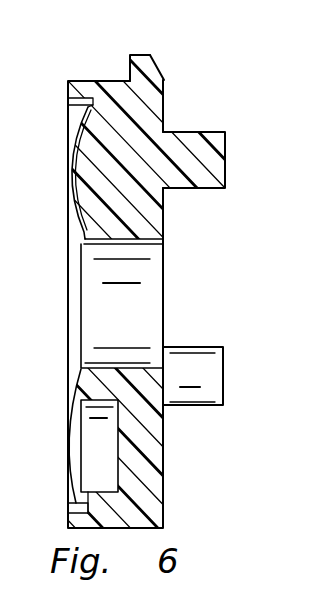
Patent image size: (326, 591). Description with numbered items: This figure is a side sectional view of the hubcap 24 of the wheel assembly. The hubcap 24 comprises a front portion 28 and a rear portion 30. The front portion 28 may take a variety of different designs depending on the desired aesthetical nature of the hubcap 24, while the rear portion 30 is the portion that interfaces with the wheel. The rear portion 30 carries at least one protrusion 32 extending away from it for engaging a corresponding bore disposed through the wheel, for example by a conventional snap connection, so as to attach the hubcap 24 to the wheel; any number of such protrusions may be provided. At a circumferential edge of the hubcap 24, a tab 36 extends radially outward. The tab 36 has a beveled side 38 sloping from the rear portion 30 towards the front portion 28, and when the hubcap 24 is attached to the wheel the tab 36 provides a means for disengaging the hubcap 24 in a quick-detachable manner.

The hubcap 24 is at (236, 90).
The front portion 28 is at (67, 304).
The rear portion 30 is at (163, 298).
The protrusion 32 is at (226, 168).
The tab 36 is at (141, 53).
The beveled side 38 is at (159, 67).